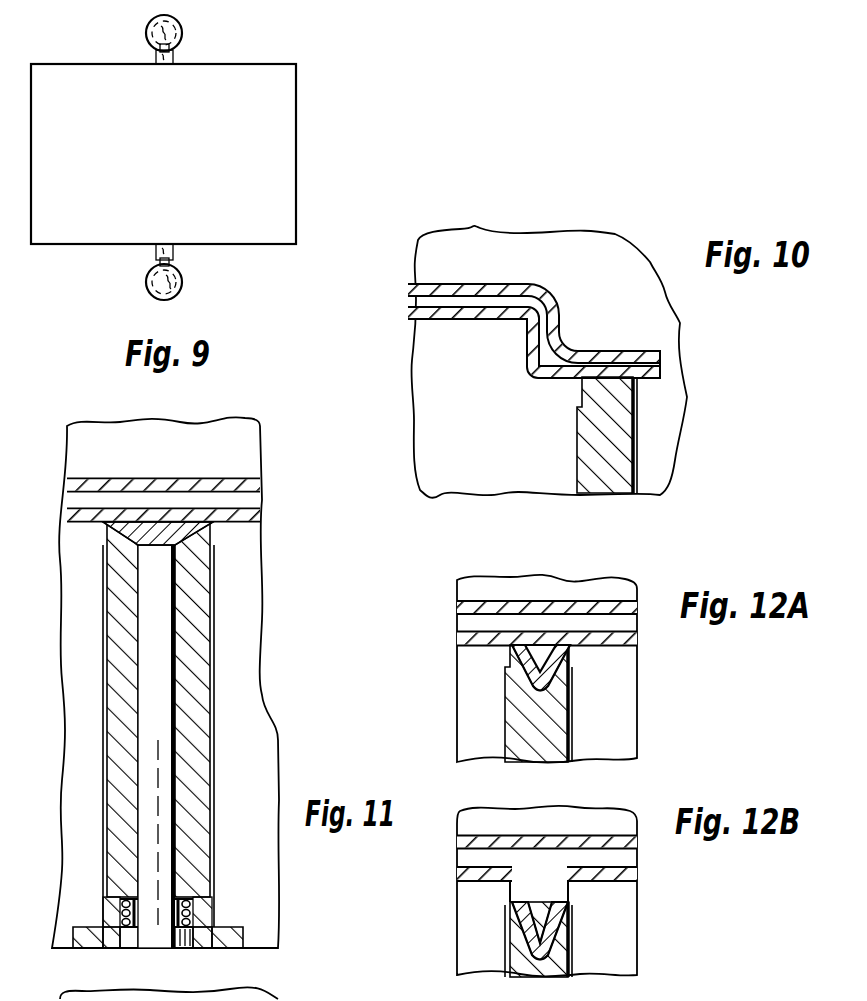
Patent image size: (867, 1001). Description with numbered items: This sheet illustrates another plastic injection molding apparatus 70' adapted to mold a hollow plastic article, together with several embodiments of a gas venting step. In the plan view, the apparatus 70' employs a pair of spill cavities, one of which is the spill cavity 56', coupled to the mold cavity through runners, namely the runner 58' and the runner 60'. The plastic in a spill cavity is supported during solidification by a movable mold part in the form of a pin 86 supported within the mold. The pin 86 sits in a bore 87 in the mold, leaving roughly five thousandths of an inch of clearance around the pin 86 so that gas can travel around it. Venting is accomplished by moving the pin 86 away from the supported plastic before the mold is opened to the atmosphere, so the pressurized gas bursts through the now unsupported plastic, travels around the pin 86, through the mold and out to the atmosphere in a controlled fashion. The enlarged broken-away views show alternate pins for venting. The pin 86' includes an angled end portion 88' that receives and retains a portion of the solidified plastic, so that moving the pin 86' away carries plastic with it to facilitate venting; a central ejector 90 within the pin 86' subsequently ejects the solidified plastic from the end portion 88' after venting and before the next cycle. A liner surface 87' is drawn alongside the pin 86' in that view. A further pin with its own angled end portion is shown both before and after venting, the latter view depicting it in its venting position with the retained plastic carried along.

In FIG. 9, the spill cavity 56' is at (203, 282).
In FIG. 9, the runner 58' is at (208, 44).
In FIG. 9, the runner 60' is at (124, 268).
In FIG. 9, the plastic injection molding apparatus 70' is at (202, 135).
In FIG. 10, the pin 86 is at (659, 435).
In FIG. 10, the bore 87 is at (689, 435).
In FIG. 11, the pin 86' is at (208, 735).
In FIG. 11, the liner layer 87' is at (223, 736).
In FIG. 11, the angled end portion 88' is at (223, 540).
In FIG. 11, the central ejector 90 is at (163, 623).